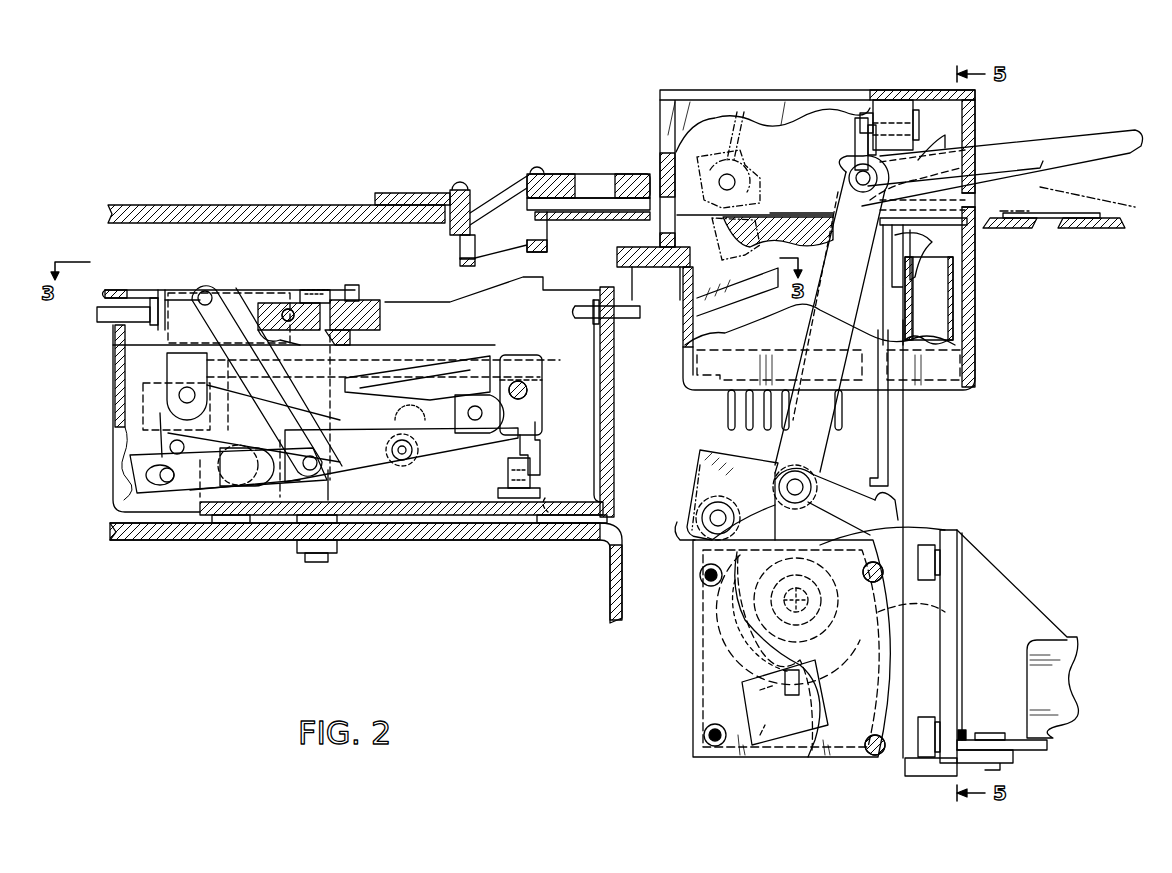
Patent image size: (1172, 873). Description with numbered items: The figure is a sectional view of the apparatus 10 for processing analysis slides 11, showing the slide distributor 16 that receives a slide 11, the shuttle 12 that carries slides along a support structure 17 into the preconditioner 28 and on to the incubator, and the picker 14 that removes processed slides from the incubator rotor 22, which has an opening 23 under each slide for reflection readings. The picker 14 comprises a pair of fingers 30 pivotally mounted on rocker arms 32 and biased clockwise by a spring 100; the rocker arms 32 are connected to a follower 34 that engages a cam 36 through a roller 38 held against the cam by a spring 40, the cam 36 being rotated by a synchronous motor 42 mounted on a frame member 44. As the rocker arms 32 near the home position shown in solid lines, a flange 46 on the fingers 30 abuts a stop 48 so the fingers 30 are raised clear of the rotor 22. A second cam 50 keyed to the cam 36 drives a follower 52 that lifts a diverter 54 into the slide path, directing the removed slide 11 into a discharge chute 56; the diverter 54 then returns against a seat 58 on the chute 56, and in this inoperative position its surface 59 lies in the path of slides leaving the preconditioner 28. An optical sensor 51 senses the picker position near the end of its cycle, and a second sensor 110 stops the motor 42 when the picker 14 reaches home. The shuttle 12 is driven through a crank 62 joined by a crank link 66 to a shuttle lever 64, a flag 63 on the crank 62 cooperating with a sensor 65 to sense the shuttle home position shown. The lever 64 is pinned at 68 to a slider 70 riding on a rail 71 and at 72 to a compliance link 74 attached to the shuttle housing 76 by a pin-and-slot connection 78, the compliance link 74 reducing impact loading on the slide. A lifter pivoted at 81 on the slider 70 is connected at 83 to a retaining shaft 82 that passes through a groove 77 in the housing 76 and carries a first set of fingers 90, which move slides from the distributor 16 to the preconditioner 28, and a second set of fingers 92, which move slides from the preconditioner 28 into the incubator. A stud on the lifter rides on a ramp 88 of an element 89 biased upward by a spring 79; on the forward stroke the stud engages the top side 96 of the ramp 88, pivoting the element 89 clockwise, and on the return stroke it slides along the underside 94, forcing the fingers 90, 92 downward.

The apparatus 10 is at (460, 590).
The analysis slide 11 is at (560, 225).
The shuttle 12 is at (430, 298).
The picker 14 is at (1025, 265).
The slide distributor 16 is at (426, 183).
The support structure 17 is at (612, 178).
The rotor 22 is at (1112, 230).
The opening 23 is at (1055, 229).
The preconditioner 28 is at (680, 88).
The fingers 30 is at (1072, 148).
The rocker arms 32 is at (762, 180).
The follower 34 is at (715, 452).
The cam 36 is at (728, 512).
The roller 38 is at (737, 562).
The spring 40 is at (692, 545).
The synchronous motor 42 is at (957, 534).
The frame member 44 is at (1010, 605).
The flange 46 is at (856, 128).
The stop 48 is at (914, 120).
The cam 50 is at (892, 520).
The optical sensor 51 is at (792, 700).
The follower 52 is at (897, 497).
The diverter 54 is at (878, 434).
The discharge chute 56 is at (955, 318).
The seat 58 is at (930, 225).
The surface 59 is at (965, 222).
The crank 62 is at (537, 442).
The flag 63 is at (540, 466).
The shuttle lever 64 is at (252, 300).
The sensor 65 is at (492, 490).
The crank link 66 is at (401, 443).
The pin 68 is at (205, 291).
The slider 70 is at (235, 300).
The rail 71 is at (585, 320).
The pin 72 is at (305, 472).
The compliance link 74 is at (130, 500).
The shuttle housing 76 is at (112, 395).
The groove 77 is at (548, 500).
The pin-and-slot connection 78 is at (146, 475).
The spring 79 is at (240, 500).
The pivot 81 is at (183, 392).
The retaining shaft 82 is at (330, 494).
The connection 83 is at (385, 450).
The ramp 88 is at (468, 372).
The element 89 is at (462, 462).
The first set of fingers 90 is at (540, 285).
The second set of fingers 92 is at (742, 292).
The underside 94 is at (442, 383).
The top side 96 is at (418, 362).
The spring 100 is at (905, 160).
The second sensor 110 is at (948, 612).